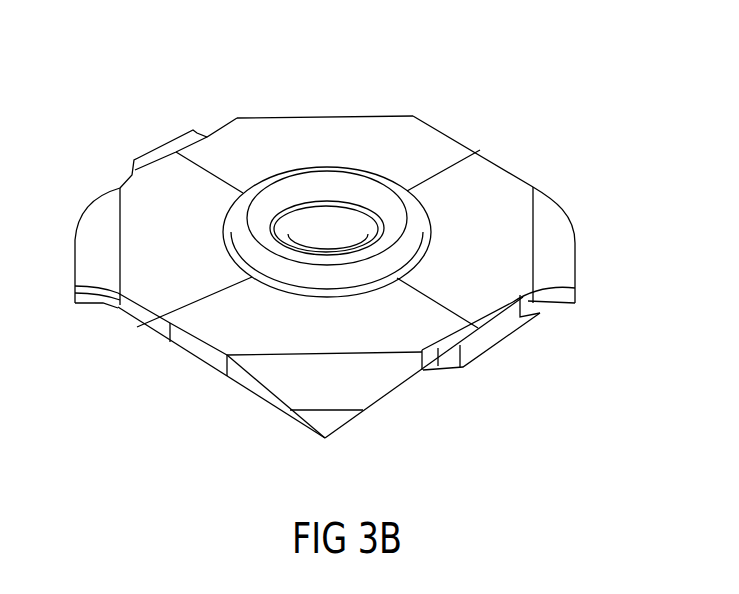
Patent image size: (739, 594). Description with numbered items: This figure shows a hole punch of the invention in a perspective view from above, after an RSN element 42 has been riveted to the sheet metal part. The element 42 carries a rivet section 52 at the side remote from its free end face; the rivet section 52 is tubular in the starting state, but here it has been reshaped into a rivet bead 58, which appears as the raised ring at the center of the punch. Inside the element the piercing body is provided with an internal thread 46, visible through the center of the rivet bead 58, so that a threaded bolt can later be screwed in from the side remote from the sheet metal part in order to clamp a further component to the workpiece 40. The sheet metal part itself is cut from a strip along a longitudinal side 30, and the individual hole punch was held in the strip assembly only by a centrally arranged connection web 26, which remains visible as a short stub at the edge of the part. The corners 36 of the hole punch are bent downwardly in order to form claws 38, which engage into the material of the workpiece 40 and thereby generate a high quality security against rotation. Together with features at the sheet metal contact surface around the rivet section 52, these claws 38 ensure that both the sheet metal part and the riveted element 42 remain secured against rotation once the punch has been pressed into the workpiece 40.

The longitudinal side 30 is at (312, 40).
The rivet bead 58 is at (308, 192).
The internal thread 46 is at (340, 220).
The rivet section 52 is at (412, 220).
The corners 36 is at (477, 150).
The claws 38 is at (293, 415).
The element 42 is at (256, 283).
The connection webs 26 is at (492, 338).
The workpiece 40 is at (490, 290).